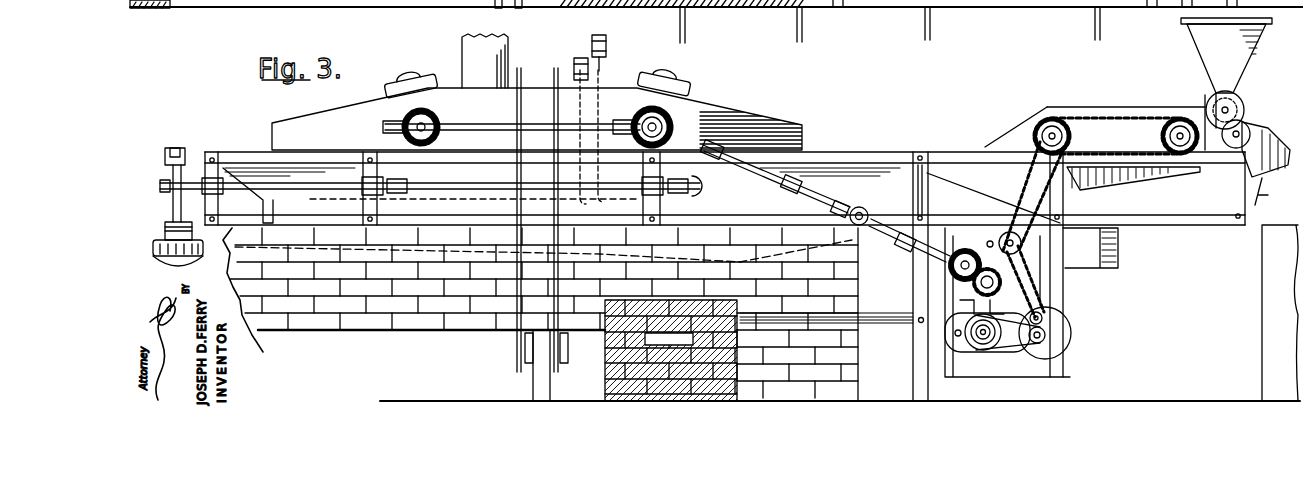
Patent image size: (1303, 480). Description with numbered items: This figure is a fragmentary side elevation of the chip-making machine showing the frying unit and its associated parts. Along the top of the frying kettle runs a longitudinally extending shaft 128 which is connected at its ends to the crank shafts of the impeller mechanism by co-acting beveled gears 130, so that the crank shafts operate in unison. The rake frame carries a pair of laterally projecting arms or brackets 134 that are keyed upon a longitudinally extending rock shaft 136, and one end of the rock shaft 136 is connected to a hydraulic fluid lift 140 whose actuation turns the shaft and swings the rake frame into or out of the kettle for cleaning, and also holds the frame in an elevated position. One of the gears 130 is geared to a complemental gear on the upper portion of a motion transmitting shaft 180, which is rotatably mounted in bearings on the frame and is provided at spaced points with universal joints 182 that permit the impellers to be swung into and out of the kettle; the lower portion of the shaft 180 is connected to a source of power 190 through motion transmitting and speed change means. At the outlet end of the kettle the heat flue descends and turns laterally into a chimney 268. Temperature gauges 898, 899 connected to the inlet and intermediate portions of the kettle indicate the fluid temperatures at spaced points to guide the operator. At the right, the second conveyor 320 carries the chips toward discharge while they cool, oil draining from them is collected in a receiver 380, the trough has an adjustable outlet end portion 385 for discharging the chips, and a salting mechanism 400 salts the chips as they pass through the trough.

The longitudinally extending shaft 128 is at (472, 124).
The beveled gears 130 is at (670, 116).
The laterally projecting arms or brackets 134 is at (705, 193).
The rock shaft 136 is at (458, 190).
The hydraulic fluid lift 140 is at (158, 240).
The motion transmitting shaft 180 is at (775, 188).
The universal joints 182 is at (867, 207).
The source of power 190 is at (1050, 338).
The chimney 268 is at (614, 366).
The second conveyor 320 is at (1112, 181).
The receiver 380 is at (1090, 248).
The adjustable outlet end portion 385 is at (1253, 136).
The salting mechanism 400 is at (1226, 84).
The temperature gauge 898 is at (574, 68).
The temperature gauge 899 is at (606, 50).